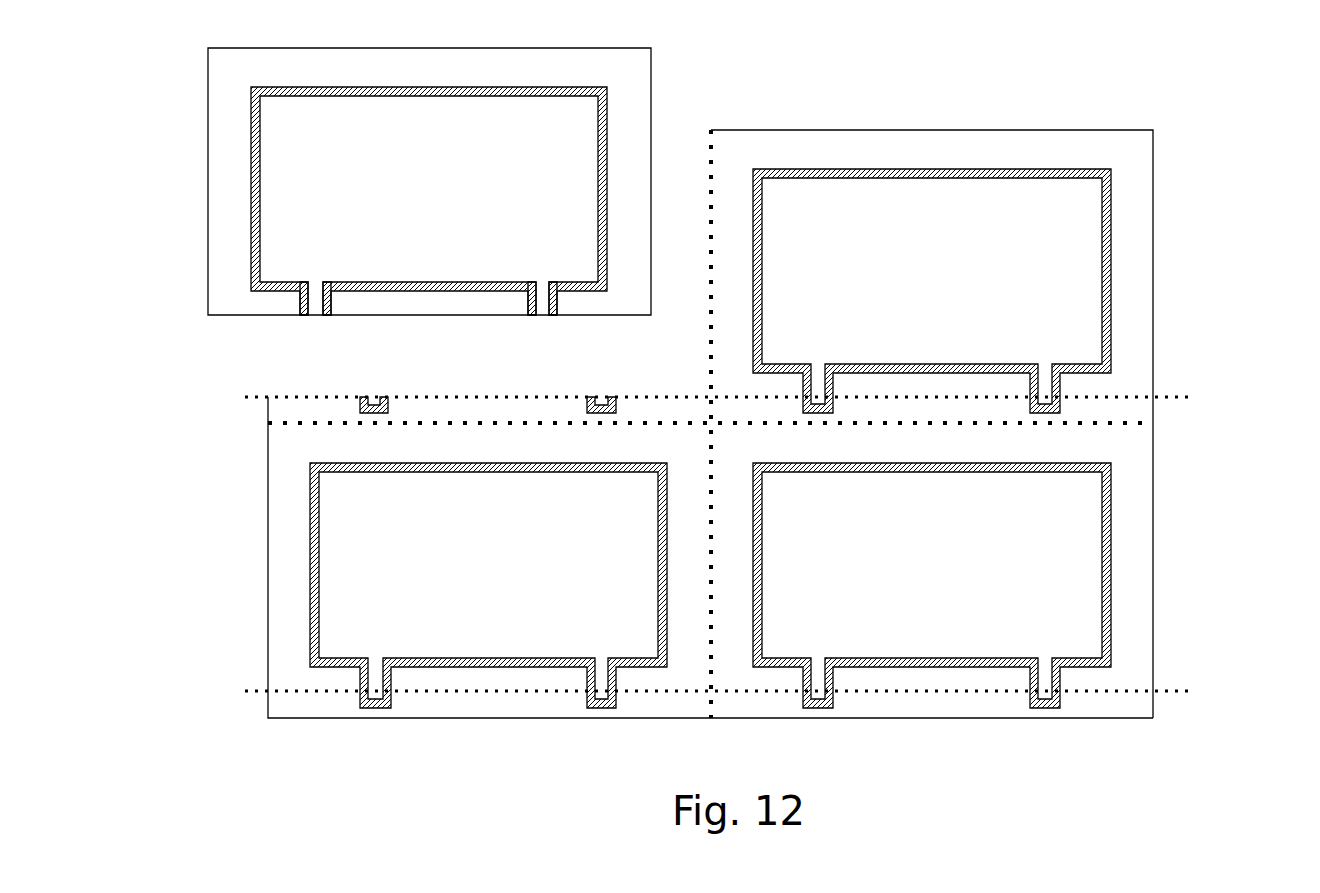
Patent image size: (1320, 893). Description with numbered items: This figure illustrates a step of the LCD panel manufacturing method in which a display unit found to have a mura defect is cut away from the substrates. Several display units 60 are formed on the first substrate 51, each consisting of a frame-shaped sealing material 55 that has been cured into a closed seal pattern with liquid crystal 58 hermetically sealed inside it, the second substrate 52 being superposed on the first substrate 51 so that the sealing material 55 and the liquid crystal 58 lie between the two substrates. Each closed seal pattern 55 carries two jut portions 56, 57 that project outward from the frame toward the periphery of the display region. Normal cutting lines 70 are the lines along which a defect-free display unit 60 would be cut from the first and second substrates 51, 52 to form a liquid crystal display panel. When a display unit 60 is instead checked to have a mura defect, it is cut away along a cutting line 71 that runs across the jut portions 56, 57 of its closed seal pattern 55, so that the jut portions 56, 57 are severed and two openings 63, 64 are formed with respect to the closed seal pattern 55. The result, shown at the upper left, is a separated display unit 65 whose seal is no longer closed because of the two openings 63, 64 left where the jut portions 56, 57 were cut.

The first substrate 51 is at (1153, 612).
The second substrate 52 is at (1143, 668).
The sealing material 55 is at (250, 222).
The jut portion 56 is at (372, 397).
The jut portion 57 is at (603, 397).
The liquid crystal 58 is at (1090, 312).
The display unit 60 is at (1156, 190).
The opening 63 is at (310, 316).
The opening 64 is at (537, 316).
The separated display unit 65 is at (657, 100).
The normal cutting line 70 is at (712, 152).
The cutting line 71 is at (1130, 397).